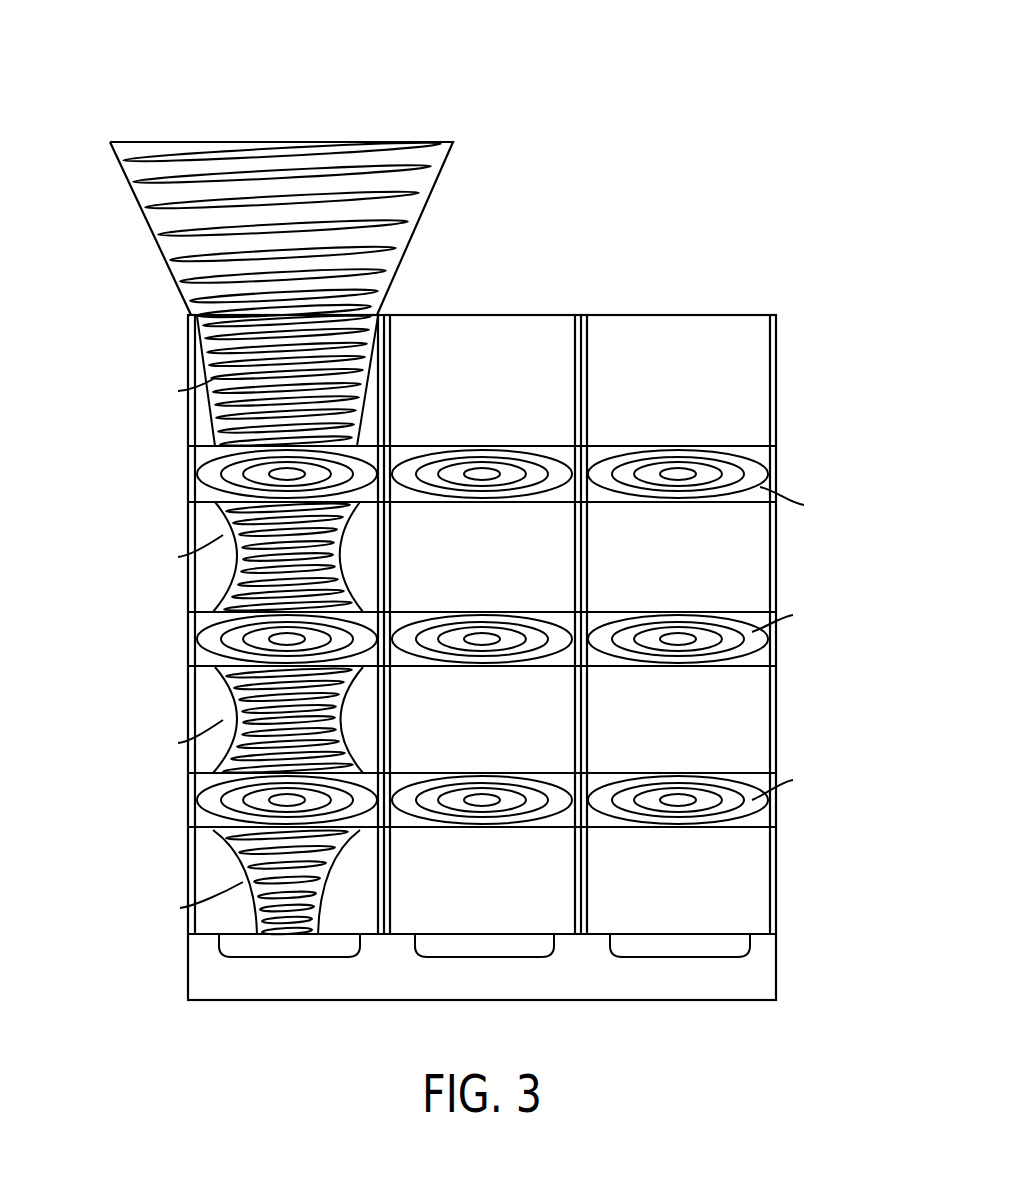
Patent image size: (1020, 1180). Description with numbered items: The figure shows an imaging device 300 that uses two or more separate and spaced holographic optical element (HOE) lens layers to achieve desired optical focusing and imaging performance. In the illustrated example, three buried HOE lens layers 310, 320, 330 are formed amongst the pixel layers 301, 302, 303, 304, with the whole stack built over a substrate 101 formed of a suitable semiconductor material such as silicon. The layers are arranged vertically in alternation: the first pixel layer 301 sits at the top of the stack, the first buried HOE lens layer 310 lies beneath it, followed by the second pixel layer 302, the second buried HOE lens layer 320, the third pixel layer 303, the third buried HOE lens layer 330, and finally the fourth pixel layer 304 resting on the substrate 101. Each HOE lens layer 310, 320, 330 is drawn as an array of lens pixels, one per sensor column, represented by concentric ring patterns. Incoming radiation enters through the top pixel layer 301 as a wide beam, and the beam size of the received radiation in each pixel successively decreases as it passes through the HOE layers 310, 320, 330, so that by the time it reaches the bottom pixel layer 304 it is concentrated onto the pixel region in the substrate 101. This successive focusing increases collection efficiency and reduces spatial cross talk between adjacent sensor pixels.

The imaging device 300 is at (603, 64).
The pixel layer 301 is at (770, 362).
The buried HOE lens layer 310 is at (770, 465).
The pixel layer 302 is at (770, 540).
The buried HOE lens layer 320 is at (770, 655).
The pixel layer 303 is at (770, 718).
The buried HOE lens layer 330 is at (770, 818).
The pixel layer 304 is at (772, 897).
The substrate 101 is at (776, 965).